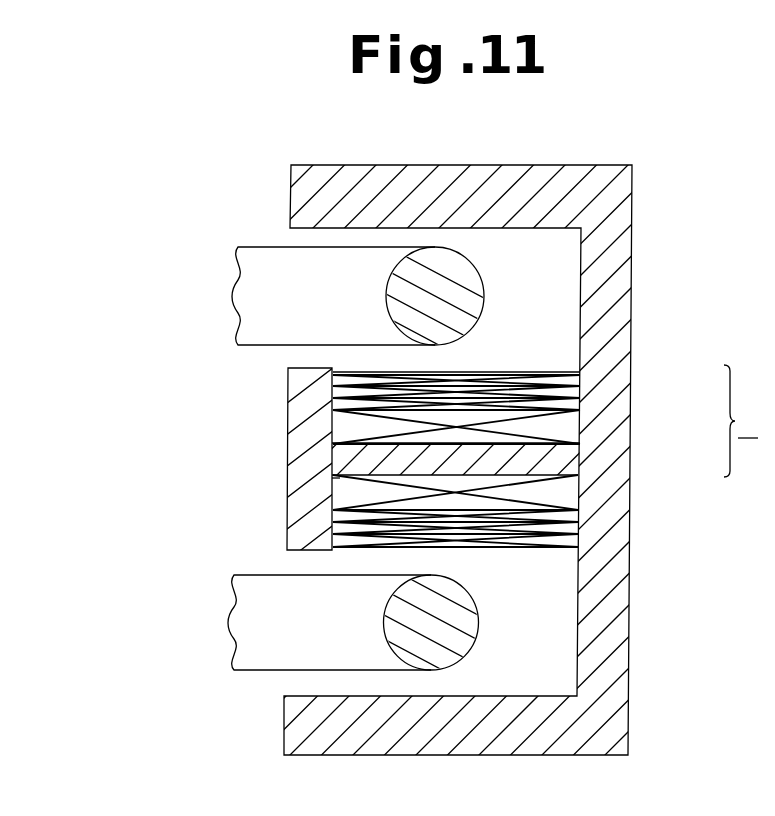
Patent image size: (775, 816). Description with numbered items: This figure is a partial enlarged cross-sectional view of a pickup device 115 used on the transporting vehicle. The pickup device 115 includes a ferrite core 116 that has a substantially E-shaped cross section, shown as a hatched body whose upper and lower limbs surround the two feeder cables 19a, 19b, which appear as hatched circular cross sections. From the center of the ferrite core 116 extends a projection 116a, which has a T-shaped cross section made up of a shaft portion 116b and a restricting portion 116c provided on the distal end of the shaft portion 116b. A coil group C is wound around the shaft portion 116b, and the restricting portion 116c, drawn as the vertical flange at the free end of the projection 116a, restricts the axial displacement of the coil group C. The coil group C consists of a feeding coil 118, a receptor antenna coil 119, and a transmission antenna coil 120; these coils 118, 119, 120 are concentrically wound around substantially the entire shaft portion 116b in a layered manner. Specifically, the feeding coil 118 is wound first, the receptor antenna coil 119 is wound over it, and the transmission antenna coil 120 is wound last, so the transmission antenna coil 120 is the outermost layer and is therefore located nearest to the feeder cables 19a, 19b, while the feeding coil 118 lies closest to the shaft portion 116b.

The pickup device 115 is at (725, 260).
The ferrite core 116 is at (479, 361).
The projection 116a is at (293, 453).
The shaft portion 116b is at (363, 480).
The restricting portion 116c is at (288, 394).
The feeding coil 118 is at (570, 432).
The receptor antenna coil 119 is at (570, 405).
The transmission antenna coil 120 is at (573, 385).
The feeder cable 19a is at (478, 302).
The feeder cable 19b is at (477, 628).
The coil group C is at (546, 456).